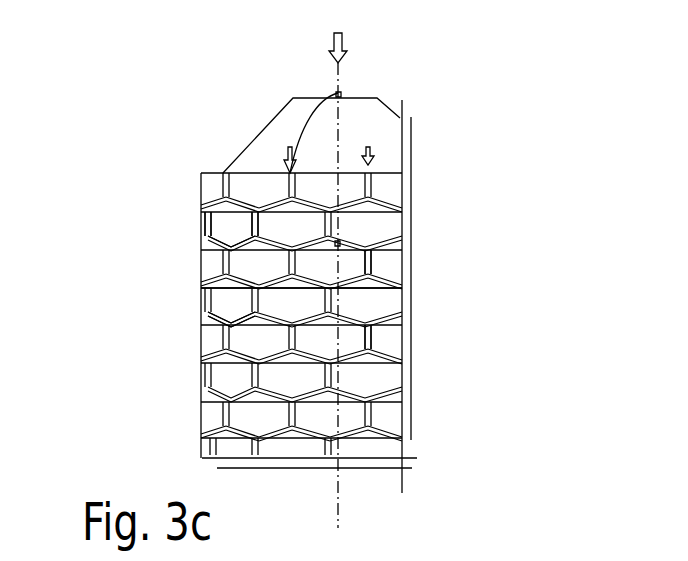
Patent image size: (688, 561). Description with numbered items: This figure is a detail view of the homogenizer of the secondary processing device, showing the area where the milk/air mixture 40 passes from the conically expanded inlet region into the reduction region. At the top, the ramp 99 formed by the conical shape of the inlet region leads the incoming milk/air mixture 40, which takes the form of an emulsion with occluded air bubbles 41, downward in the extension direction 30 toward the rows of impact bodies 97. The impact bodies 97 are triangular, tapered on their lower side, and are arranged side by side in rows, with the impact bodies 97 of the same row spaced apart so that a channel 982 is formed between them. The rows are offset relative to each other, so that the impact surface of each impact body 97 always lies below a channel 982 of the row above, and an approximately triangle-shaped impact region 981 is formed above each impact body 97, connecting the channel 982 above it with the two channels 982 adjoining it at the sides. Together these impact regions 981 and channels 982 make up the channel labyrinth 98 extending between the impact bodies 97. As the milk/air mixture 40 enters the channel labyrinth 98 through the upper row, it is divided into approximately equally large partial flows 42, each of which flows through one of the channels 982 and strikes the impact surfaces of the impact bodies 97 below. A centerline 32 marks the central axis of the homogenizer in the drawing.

The extension direction 30 is at (340, 42).
The center axis line 32 is at (338, 510).
The milk/air mixture 40 is at (302, 123).
The air bubbles 41 is at (339, 94).
The partial flows 42 is at (372, 264).
The impact bodies 97 is at (225, 230).
The channel labyrinth 98 is at (210, 282).
The impact region 981 is at (255, 320).
The channel 982 is at (377, 340).
The ramp 99 is at (255, 138).